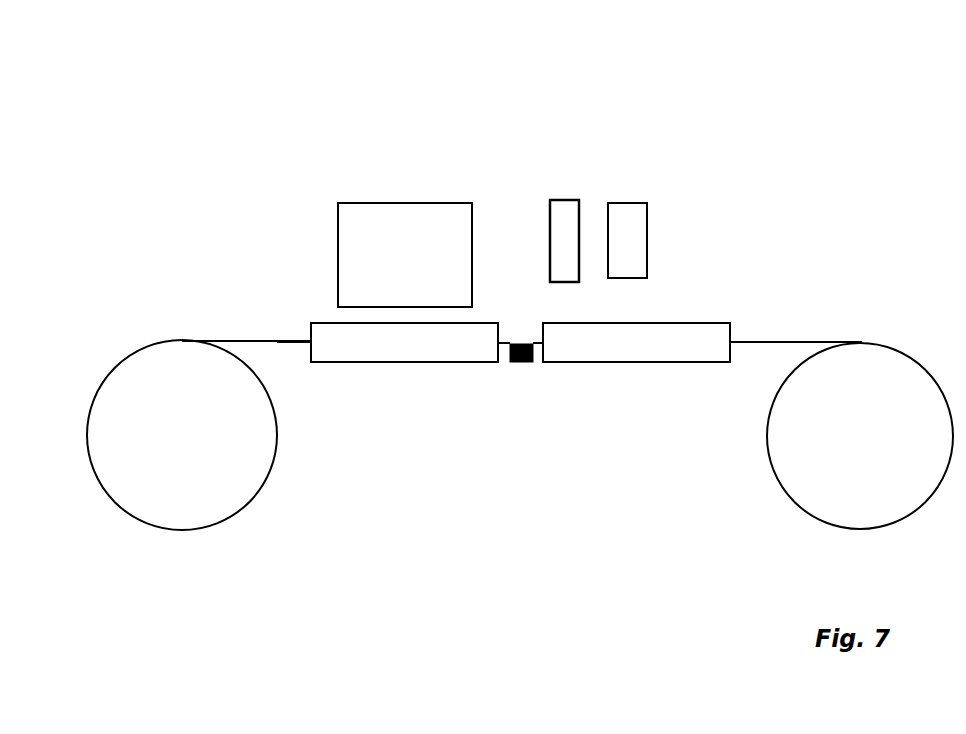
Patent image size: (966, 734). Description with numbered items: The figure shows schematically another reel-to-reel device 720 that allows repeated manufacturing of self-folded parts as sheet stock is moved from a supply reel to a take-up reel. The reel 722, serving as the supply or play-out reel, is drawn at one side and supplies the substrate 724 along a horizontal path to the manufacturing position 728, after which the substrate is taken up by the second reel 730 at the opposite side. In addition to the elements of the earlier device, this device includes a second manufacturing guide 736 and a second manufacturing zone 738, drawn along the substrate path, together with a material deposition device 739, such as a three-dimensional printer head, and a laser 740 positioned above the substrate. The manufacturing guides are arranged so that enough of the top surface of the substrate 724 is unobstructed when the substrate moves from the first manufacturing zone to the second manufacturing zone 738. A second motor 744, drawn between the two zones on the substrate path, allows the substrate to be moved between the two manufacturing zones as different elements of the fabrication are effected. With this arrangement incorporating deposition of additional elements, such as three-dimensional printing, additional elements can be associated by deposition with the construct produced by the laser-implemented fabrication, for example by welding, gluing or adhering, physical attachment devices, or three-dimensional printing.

The reel-to-reel device 720 is at (272, 108).
The reel 722 is at (770, 470).
The substrate 724 is at (768, 340).
The manufacturing position 728 is at (623, 362).
The second reel 730 is at (113, 500).
The second manufacturing guide 736 is at (338, 270).
The second manufacturing zone 738 is at (386, 362).
The material deposition device 739 is at (563, 208).
The laser 740 is at (647, 252).
The second motor 744 is at (522, 362).